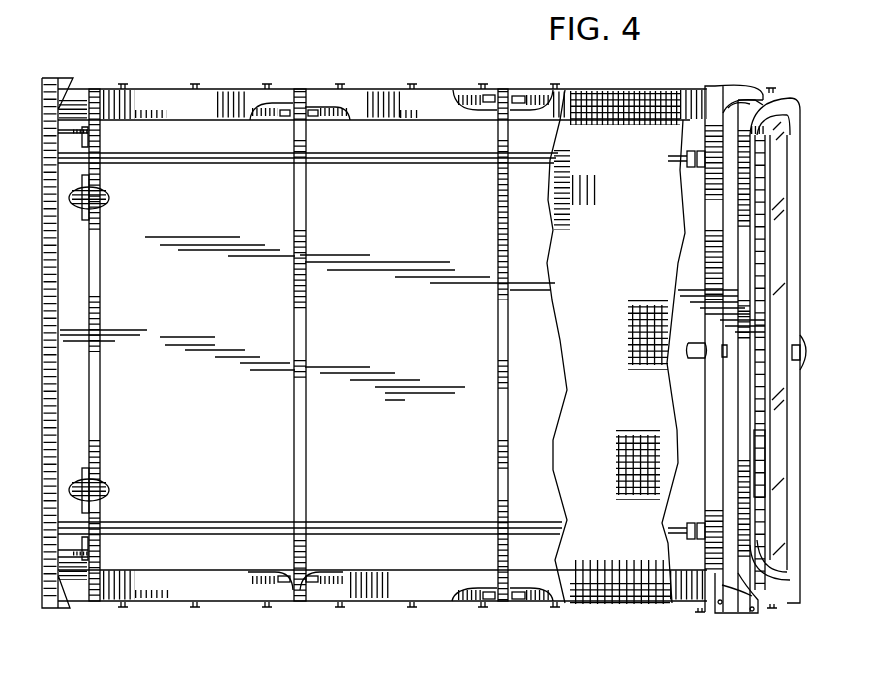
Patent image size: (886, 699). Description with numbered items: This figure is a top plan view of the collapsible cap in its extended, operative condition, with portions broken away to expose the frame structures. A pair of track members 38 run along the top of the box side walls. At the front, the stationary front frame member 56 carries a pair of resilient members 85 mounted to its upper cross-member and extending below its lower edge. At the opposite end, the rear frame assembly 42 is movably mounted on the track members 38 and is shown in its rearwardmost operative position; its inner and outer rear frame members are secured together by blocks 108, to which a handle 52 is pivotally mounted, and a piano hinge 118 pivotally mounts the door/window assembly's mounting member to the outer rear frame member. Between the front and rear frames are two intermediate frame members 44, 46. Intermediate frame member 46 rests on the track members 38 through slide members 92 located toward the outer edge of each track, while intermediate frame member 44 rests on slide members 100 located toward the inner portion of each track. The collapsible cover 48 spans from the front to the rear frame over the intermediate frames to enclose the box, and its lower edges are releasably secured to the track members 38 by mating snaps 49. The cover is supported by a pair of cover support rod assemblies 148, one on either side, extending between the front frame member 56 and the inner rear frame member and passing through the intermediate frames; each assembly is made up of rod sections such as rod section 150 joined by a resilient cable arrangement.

The track members 38 is at (221, 93).
The rear frame assembly 42 is at (776, 81).
The intermediate frame member 44 is at (308, 341).
The intermediate frame member 46 is at (509, 375).
The collapsible cover 48 is at (654, 277).
The snaps 49 is at (195, 83).
The handle 52 is at (705, 140).
The front frame member 56 is at (103, 364).
The resilient members 85 is at (109, 200).
The slide member 92 is at (539, 88).
The slide member 100 is at (318, 108).
The blocks 108 is at (745, 110).
The piano hinge 118 is at (768, 275).
The cover support rod assemblies 148 is at (373, 163).
The rod section 150 is at (390, 522).